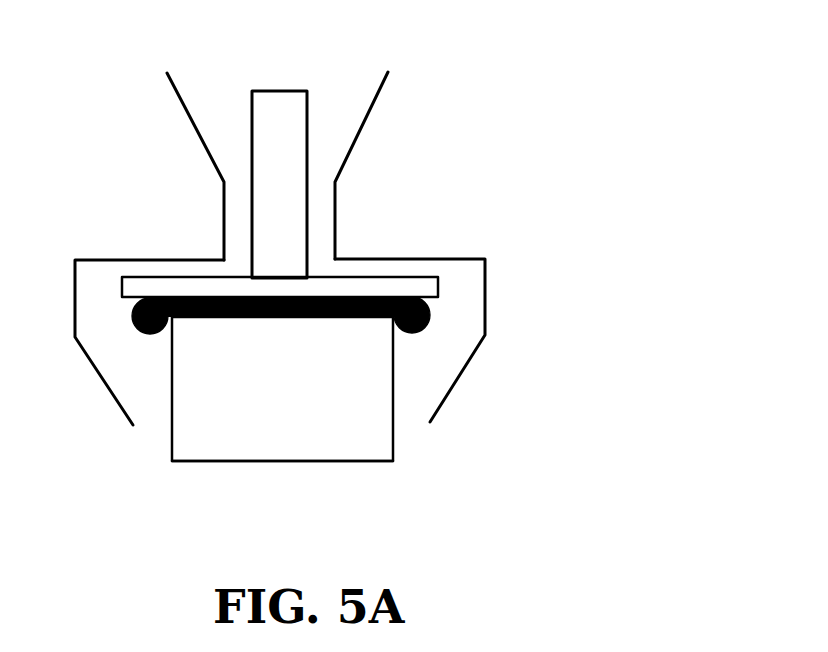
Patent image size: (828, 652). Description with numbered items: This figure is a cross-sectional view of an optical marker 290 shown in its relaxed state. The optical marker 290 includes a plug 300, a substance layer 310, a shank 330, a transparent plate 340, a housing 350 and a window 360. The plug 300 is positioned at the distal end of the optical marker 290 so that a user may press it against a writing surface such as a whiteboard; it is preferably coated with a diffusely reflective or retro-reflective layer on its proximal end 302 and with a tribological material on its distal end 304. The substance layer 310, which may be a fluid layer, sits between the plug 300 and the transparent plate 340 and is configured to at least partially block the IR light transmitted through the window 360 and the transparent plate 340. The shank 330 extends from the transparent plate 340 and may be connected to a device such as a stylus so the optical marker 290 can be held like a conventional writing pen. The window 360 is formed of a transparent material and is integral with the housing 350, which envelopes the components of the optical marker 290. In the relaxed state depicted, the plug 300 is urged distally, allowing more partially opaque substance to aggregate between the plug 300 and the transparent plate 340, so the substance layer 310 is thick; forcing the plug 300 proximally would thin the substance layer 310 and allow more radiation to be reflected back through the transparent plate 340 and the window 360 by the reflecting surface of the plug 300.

The optical marker 290 is at (560, 137).
The plug 300 is at (393, 445).
The proximal end 302 is at (223, 317).
The distal end 304 is at (275, 462).
The substance layer 310 is at (422, 332).
The shank 330 is at (308, 108).
The transparent plate 340 is at (393, 275).
The housing 350 is at (173, 80).
The window 360 is at (147, 258).